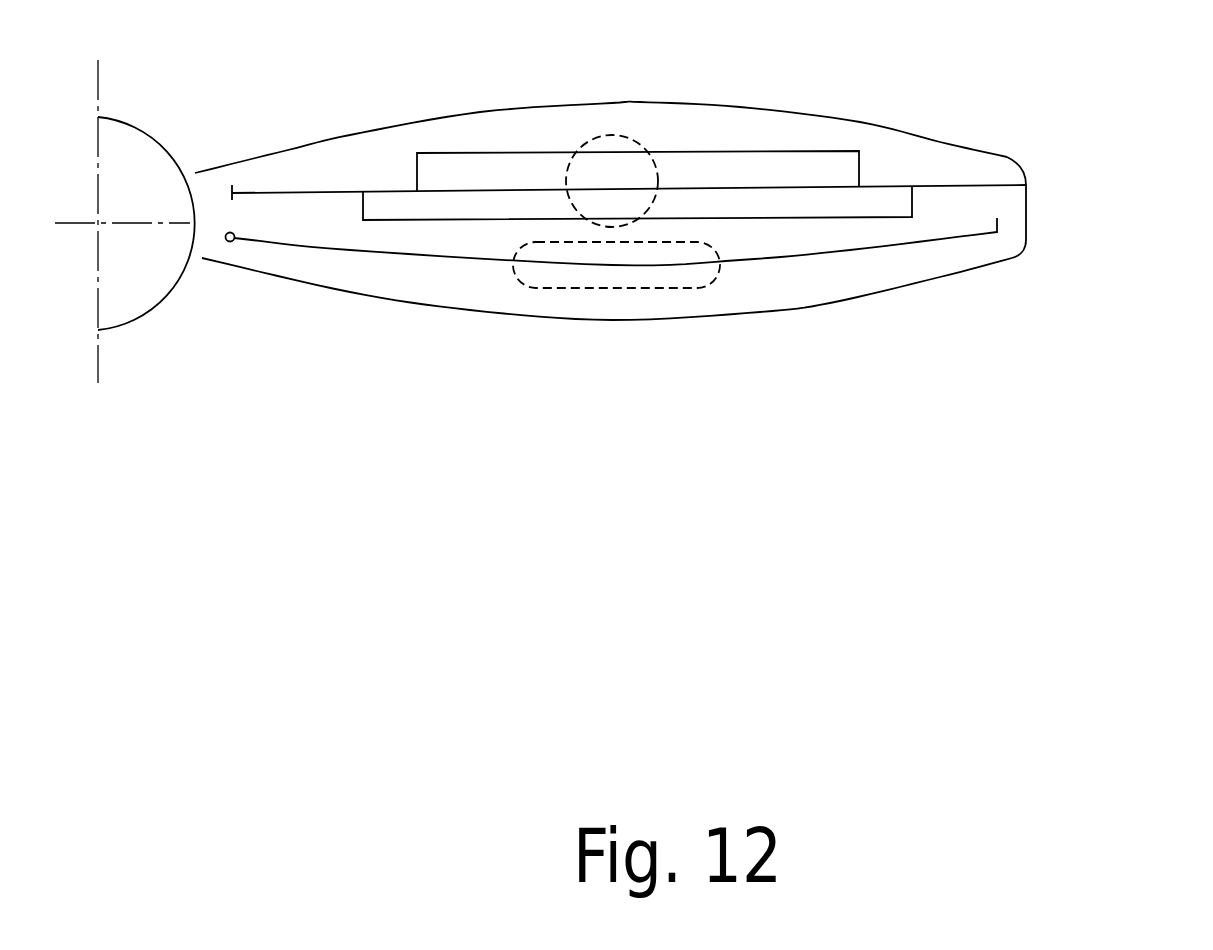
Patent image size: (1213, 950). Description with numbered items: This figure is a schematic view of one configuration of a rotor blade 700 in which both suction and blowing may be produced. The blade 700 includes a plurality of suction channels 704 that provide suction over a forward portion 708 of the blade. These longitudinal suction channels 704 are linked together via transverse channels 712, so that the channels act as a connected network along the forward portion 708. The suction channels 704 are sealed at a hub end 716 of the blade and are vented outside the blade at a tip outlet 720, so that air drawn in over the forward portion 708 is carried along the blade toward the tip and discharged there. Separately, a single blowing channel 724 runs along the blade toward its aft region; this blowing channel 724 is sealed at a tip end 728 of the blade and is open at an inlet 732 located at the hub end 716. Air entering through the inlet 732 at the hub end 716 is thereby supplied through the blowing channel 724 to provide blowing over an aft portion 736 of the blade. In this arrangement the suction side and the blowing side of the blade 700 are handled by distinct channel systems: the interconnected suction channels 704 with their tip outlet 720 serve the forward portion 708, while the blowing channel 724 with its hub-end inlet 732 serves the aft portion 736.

The rotor blade 700 is at (382, 417).
The suction channels 704 is at (612, 135).
The forward portion 708 is at (745, 152).
The transverse channels 712 is at (862, 170).
The hub end 716 is at (288, 195).
The tip outlet 720 is at (1026, 185).
The blowing channel 724 is at (612, 288).
The tip end 728 is at (997, 233).
The inlet 732 is at (229, 242).
The aft portion 736 is at (830, 283).